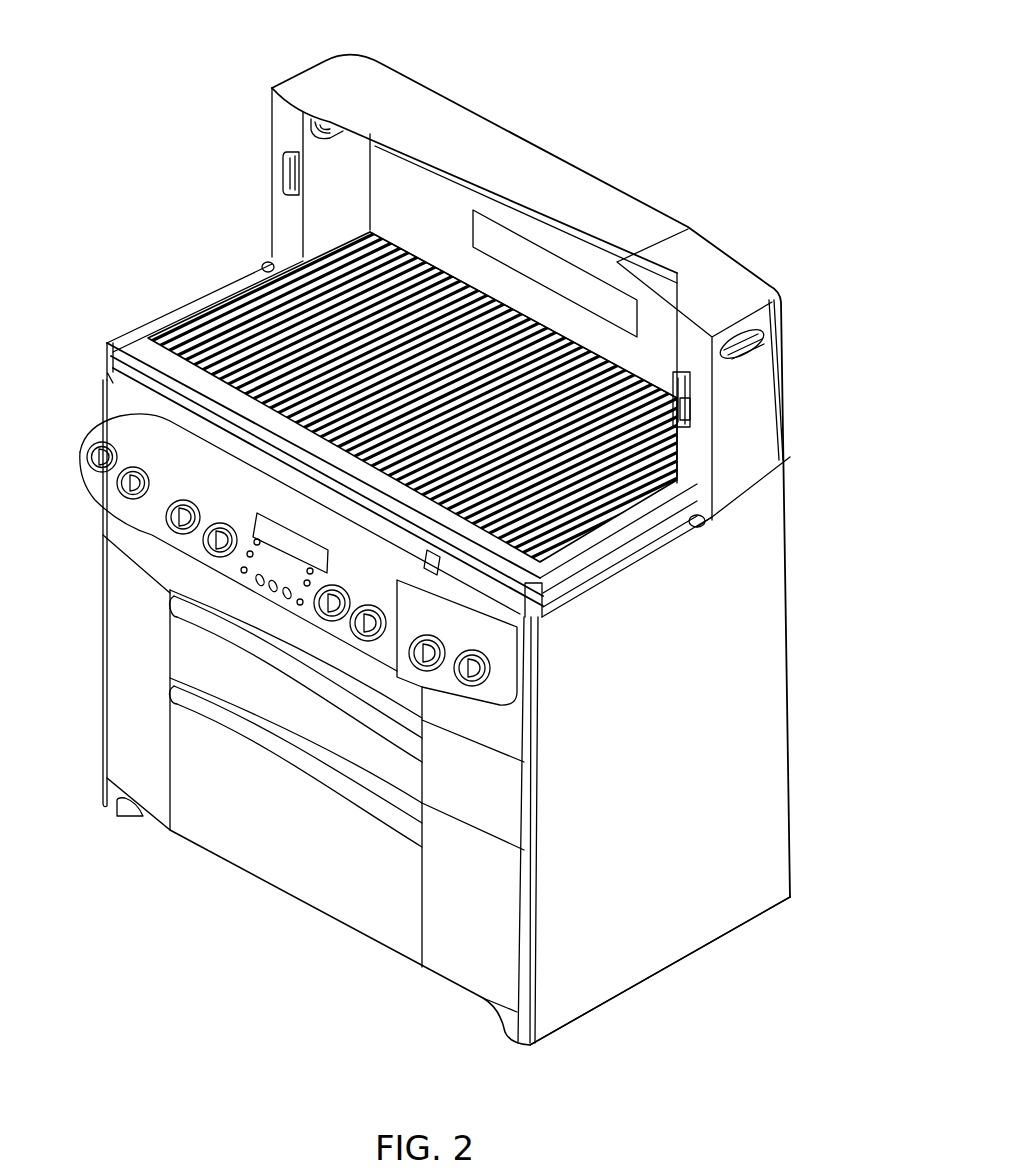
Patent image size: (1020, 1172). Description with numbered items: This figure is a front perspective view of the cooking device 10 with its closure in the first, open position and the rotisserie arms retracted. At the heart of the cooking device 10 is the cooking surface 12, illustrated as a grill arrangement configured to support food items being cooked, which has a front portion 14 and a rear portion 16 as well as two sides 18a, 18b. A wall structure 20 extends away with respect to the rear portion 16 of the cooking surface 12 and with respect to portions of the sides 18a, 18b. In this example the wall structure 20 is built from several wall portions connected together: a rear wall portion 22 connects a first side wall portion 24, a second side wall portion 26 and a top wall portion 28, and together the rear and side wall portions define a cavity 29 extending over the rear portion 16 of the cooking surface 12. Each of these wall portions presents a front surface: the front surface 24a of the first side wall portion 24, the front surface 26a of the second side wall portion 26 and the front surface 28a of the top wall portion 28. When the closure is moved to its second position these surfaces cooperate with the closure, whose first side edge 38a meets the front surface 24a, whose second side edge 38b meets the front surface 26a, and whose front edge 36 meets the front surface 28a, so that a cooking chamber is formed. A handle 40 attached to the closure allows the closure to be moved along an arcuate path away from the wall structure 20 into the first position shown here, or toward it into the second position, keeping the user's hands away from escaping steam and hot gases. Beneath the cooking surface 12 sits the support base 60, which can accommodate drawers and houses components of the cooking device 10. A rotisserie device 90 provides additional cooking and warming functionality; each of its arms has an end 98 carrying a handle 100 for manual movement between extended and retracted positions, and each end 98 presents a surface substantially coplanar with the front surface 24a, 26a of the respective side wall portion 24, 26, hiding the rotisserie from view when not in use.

The cooking device 10 is at (663, 160).
The cooking surface 12 is at (257, 323).
The front portion 14 is at (325, 447).
The rear portion 16 is at (550, 337).
The side 18a is at (632, 518).
The side 18b is at (270, 270).
The wall structure 20 is at (505, 100).
The rear wall portion 22 is at (592, 358).
The first side wall portion 24 is at (768, 408).
The front surface 24a is at (694, 468).
The second side wall portion 26 is at (336, 184).
The front surface 26a is at (275, 112).
The top wall portion 28 is at (543, 156).
The front surface 28a is at (546, 232).
The cavity 29 is at (398, 165).
The front edge 36 is at (207, 420).
The first side edge 38a is at (580, 553).
The second side edge 38b is at (158, 322).
The handle 40 is at (227, 477).
The support base 60 is at (808, 770).
The rotisserie device 90 is at (706, 390).
The end 98 is at (690, 404).
The handle 100 is at (676, 380).